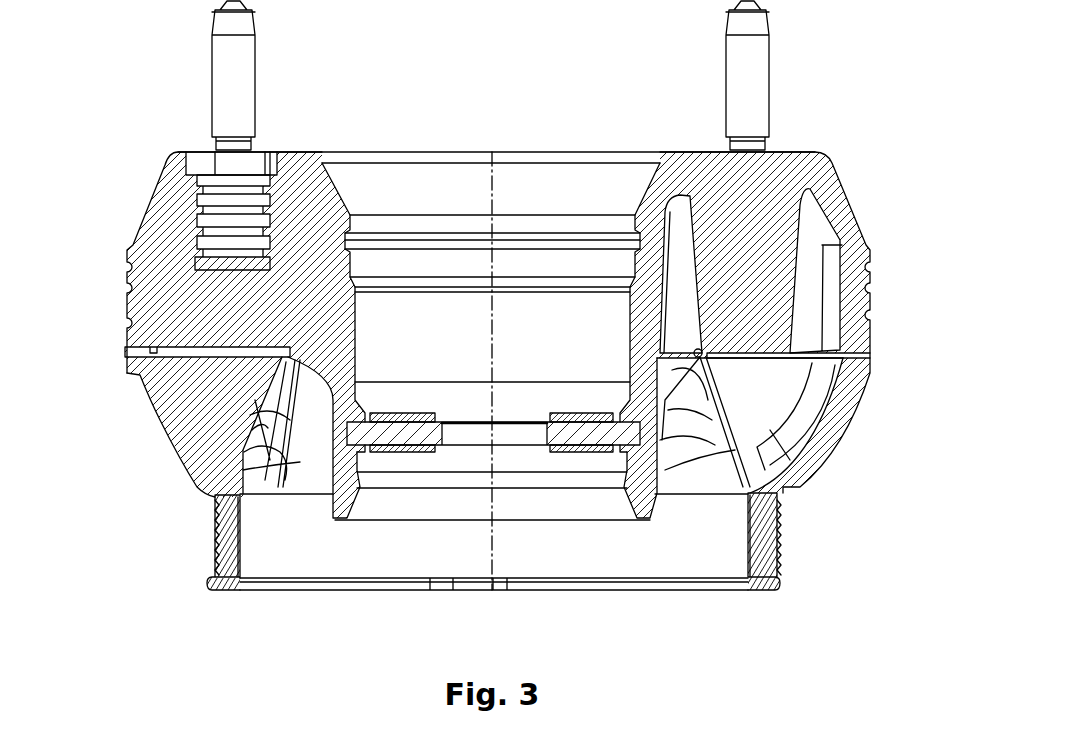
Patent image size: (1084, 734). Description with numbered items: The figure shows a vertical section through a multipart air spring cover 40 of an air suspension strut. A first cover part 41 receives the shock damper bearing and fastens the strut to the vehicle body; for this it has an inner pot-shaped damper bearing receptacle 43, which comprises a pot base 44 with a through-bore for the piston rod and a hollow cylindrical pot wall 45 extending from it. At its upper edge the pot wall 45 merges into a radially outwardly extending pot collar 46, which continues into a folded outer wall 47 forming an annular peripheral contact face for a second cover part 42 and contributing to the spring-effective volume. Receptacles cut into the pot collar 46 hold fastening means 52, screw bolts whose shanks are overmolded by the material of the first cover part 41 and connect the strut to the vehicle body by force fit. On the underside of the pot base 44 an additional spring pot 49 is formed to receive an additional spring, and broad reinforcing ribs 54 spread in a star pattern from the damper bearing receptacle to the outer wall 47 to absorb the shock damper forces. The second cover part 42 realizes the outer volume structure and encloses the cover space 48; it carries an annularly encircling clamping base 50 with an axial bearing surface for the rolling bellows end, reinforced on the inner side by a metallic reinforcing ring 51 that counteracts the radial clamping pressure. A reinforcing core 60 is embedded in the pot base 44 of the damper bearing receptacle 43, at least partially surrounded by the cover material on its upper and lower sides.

The air spring cover 40 is at (110, 100).
The first cover part 41 is at (140, 206).
The second cover part 42 is at (153, 449).
The damper bearing receptacle 43 is at (366, 312).
The pot base 44 is at (585, 410).
The pot wall 45 is at (340, 352).
The pot collar 46 is at (288, 165).
The outer wall 47 is at (863, 298).
The cover space 48 is at (781, 396).
The additional spring pot 49 is at (648, 503).
The clamping base 50 is at (213, 548).
The reinforcing ring 51 is at (748, 548).
The fastening means 52 is at (235, 47).
The reinforcing ribs 54 is at (300, 475).
The reinforcing core 60 is at (412, 437).